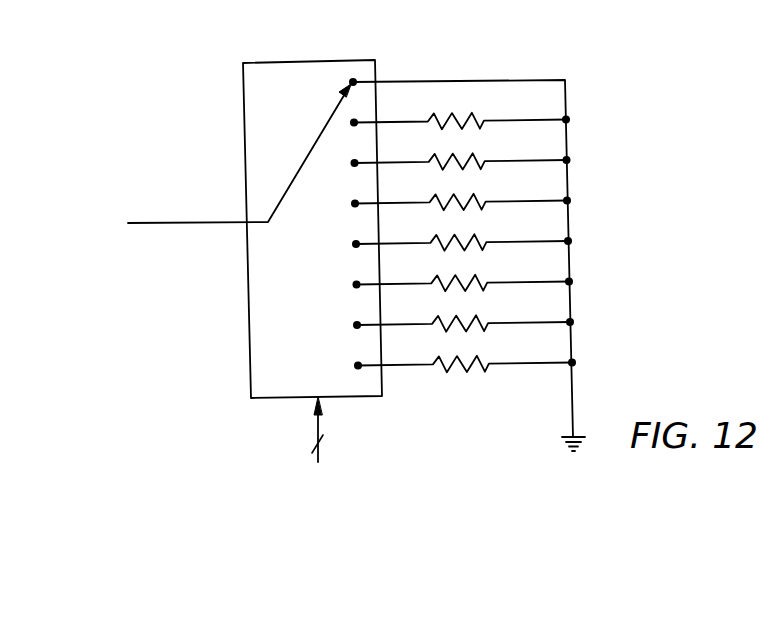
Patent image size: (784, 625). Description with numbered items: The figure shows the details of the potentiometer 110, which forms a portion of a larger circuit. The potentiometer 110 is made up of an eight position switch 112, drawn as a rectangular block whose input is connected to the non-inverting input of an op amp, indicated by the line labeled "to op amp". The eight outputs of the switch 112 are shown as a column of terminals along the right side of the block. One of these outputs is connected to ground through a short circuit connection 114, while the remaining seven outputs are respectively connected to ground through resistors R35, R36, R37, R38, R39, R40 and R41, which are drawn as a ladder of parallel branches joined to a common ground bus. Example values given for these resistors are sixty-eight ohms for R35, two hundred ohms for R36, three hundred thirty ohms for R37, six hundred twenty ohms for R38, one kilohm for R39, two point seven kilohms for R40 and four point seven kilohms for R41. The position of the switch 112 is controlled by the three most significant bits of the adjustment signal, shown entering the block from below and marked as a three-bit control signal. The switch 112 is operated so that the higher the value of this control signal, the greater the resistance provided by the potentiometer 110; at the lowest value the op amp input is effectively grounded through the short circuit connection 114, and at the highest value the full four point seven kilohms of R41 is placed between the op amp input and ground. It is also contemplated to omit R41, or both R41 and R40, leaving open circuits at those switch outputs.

The potentiometer 110 is at (193, 53).
The eight position switch 112 is at (249, 305).
The short circuit connection 114 is at (455, 80).
The resistor R35 is at (480, 126).
The resistor R36 is at (481, 166).
The resistor R37 is at (482, 207).
The resistor R38 is at (482, 247).
The resistor R39 is at (483, 288).
The resistor R40 is at (484, 328).
The resistor R41 is at (485, 369).